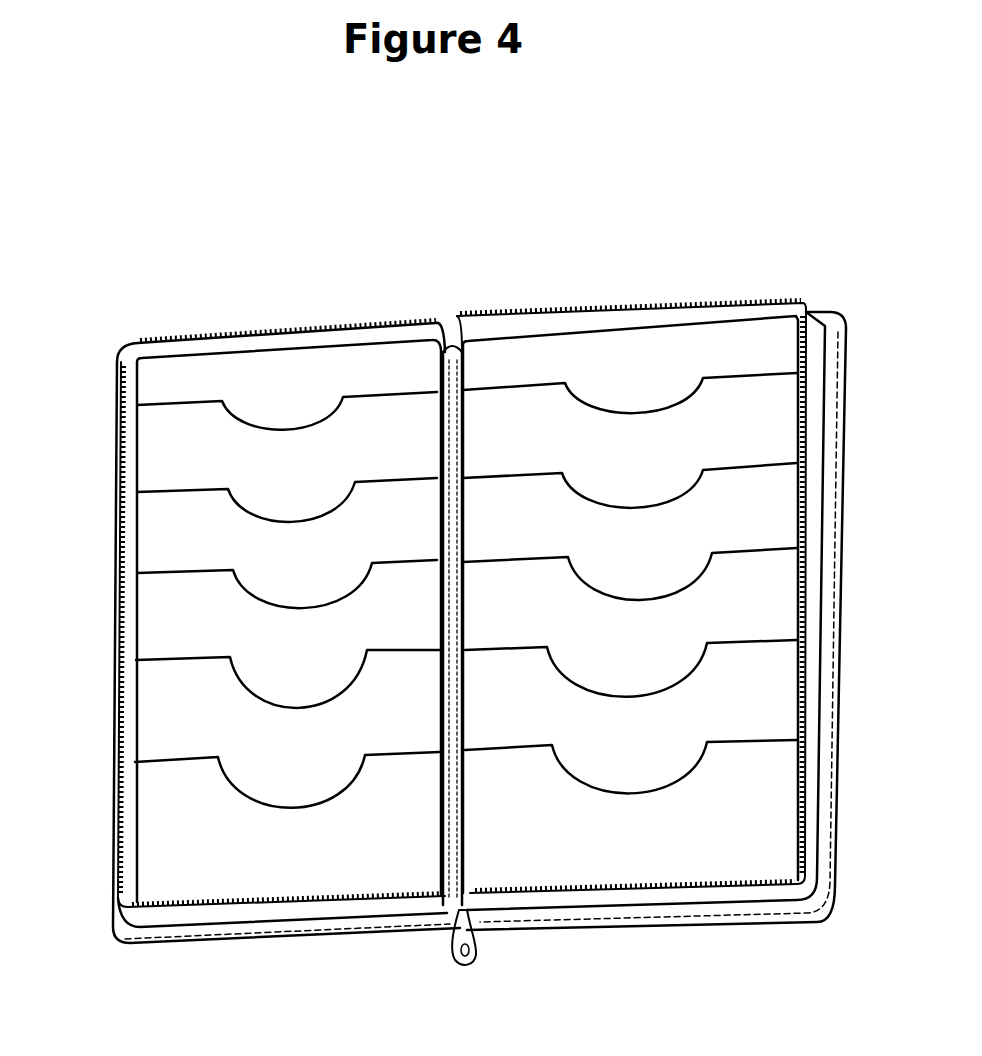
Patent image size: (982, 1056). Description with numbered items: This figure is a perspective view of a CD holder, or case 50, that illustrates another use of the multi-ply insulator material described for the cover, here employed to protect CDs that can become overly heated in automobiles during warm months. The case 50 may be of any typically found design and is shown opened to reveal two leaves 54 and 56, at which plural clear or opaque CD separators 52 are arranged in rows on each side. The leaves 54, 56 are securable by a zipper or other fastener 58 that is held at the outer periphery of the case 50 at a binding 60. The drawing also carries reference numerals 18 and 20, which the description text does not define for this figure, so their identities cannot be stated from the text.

The case 18 is at (394, 952).
The card pocket 20 is at (293, 380).
The case 50 is at (403, 282).
The CD separators 52 is at (167, 642).
The leaf 54 is at (178, 372).
The leaf 56 is at (652, 350).
The zipper 58 is at (733, 297).
The binding 60 is at (612, 915).